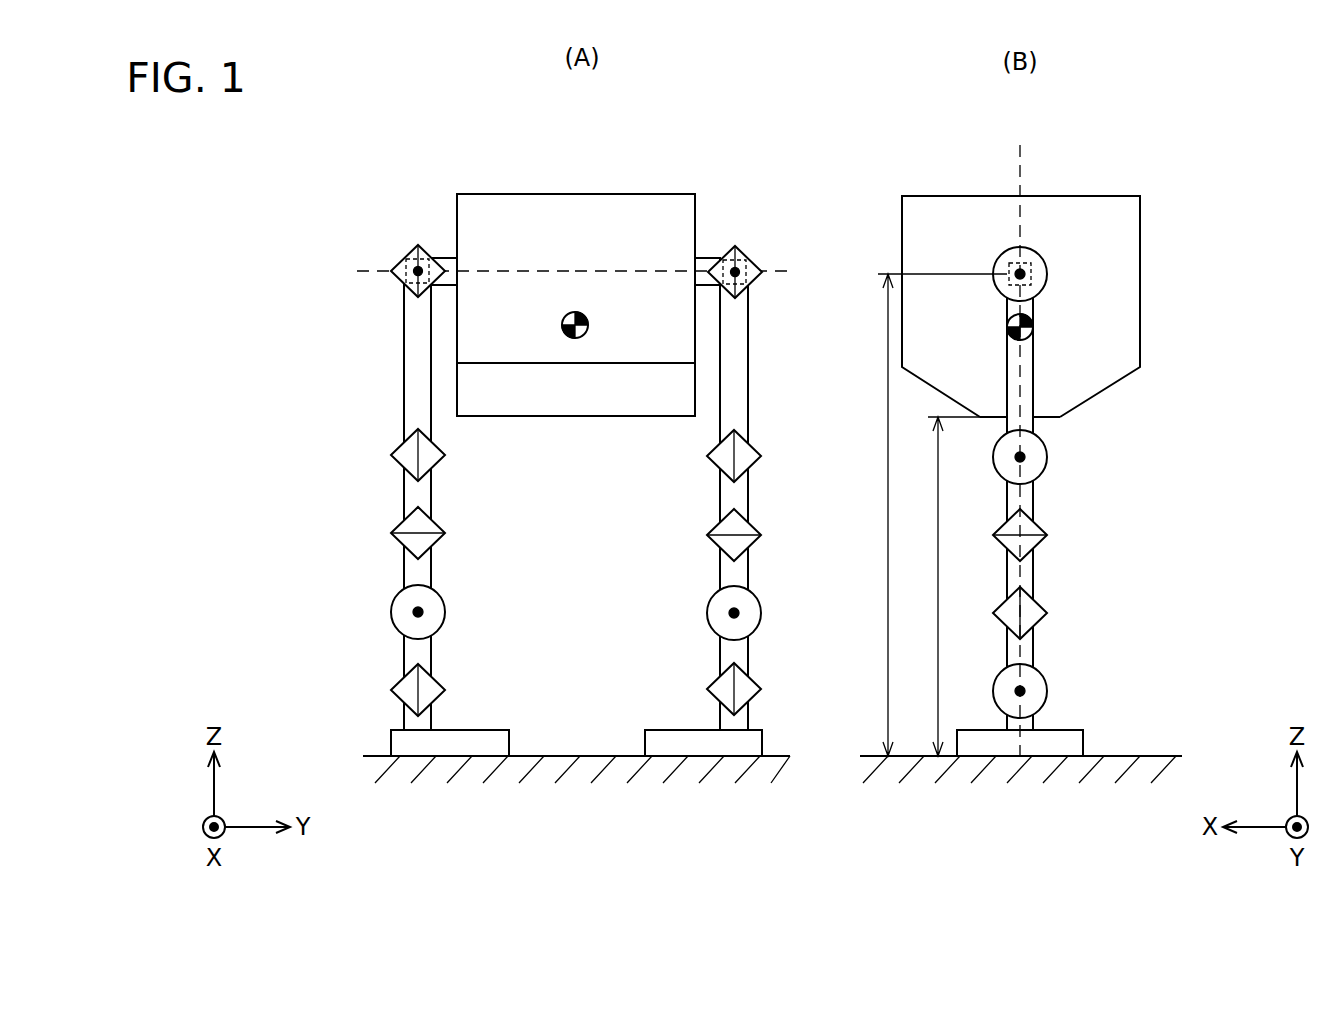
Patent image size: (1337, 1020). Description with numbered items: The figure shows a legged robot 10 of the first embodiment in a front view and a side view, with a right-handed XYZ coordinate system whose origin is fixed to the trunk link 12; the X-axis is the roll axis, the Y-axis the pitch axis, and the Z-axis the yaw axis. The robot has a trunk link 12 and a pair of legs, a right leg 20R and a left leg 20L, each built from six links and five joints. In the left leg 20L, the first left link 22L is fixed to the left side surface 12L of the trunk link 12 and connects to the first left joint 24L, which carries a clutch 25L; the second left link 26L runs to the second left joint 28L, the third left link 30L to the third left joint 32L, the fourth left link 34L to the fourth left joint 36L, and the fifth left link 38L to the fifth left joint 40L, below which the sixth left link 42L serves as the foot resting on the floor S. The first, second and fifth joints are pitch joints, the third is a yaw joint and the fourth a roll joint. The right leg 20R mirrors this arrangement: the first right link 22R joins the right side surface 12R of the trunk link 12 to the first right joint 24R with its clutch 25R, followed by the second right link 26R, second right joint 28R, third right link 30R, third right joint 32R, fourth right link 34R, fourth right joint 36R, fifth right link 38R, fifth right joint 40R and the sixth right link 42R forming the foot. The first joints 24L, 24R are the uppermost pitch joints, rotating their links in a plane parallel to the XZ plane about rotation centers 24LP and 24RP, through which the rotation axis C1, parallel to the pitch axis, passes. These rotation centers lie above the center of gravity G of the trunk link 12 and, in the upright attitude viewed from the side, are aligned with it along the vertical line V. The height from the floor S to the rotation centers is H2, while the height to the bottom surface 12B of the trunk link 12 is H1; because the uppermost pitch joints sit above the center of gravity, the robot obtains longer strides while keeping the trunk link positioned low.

The legged robot 10 is at (689, 113).
The trunk link 12 is at (597, 194).
The right side surface of the trunk link 12R is at (449, 408).
The left side surface of the trunk link 12L is at (703, 408).
The bottom surface of the trunk link 12B is at (978, 427).
The right leg 20R is at (452, 505).
The left leg 20L is at (700, 505).
The first right link 22R is at (447, 258).
The first left link 22L is at (708, 258).
The first right joint 24R is at (410, 252).
The first left joint 24L is at (750, 255).
The rotation center of the first right joint 24RP is at (402, 278).
The rotation center of the first left joint 24LP is at (745, 278).
The clutch 25R is at (392, 271).
The clutch 25L is at (760, 265).
The second right link 26R is at (404, 385).
The second left link 26L is at (748, 385).
The second right joint 28R is at (395, 450).
The second left joint 28L is at (758, 452).
The third right link 30R is at (404, 495).
The third left link 30L is at (748, 495).
The third right joint 32R is at (395, 530).
The third left joint 32L is at (758, 532).
The fourth right link 34R is at (404, 570).
The fourth left link 34L is at (748, 572).
The fourth right joint 36R is at (394, 608).
The fourth left joint 36L is at (758, 609).
The fifth right link 38R is at (404, 652).
The fifth left link 38L is at (748, 652).
The fifth right joint 40R is at (395, 686).
The fifth left joint 40L is at (758, 688).
The sixth right link 42R is at (392, 730).
The sixth left link 42L is at (762, 730).
The rotation axis of the uppermost pitch joints C1 is at (392, 270).
The center of gravity G is at (574, 312).
The floor S is at (565, 755).
The vertical line V is at (1018, 175).
The height from the floor to the bottom surface of the trunk link H1 is at (940, 586).
The height from the floor to the rotation centers of the uppermost pitch joints H2 is at (930, 515).